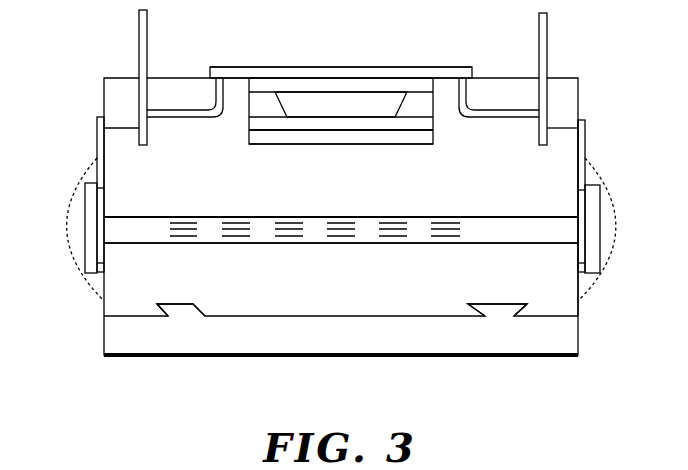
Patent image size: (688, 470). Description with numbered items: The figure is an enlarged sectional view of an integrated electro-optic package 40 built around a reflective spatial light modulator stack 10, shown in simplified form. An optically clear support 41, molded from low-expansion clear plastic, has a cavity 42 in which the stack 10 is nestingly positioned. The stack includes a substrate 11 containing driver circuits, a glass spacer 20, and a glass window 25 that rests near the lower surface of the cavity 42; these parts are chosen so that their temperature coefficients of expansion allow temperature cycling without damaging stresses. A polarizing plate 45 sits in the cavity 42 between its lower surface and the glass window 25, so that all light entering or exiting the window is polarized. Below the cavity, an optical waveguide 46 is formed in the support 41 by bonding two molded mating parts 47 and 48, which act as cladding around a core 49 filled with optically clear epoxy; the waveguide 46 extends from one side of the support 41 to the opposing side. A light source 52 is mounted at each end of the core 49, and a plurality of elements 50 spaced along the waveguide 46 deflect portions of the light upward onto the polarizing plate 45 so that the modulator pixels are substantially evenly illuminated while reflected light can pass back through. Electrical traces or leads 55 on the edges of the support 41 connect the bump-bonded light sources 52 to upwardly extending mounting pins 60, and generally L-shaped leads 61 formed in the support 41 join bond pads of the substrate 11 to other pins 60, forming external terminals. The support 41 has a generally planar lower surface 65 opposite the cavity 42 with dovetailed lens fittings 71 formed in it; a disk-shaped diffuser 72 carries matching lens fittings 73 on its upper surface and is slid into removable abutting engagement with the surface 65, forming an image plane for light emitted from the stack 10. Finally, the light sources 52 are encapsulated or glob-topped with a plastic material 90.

The reflective spatial light modulator stack 10 is at (412, 67).
The substrate 11 is at (357, 67).
The glass spacer 20 is at (433, 112).
The glass window 25 is at (398, 131).
The integrated electro-optic package 40 is at (181, 456).
The optically clear support 41 is at (161, 191).
The cavity 42 is at (247, 78).
The polarizing plate 45 is at (277, 145).
The optical waveguide 46 is at (487, 205).
The mating part 47 is at (578, 150).
The mating part 48 is at (590, 304).
The core 49 is at (196, 217).
The elements 50 is at (237, 221).
The light source 52 is at (84, 226).
The electrical traces or leads 55 is at (96, 137).
The mounting pins 60 is at (139, 47).
The L-shaped leads 61 is at (204, 118).
The planar lower surface 65 is at (350, 306).
The lens fittings 71 is at (207, 299).
The diffuser 72 is at (580, 340).
The matching lens fittings 73 is at (183, 312).
The plastic material 90 is at (78, 178).